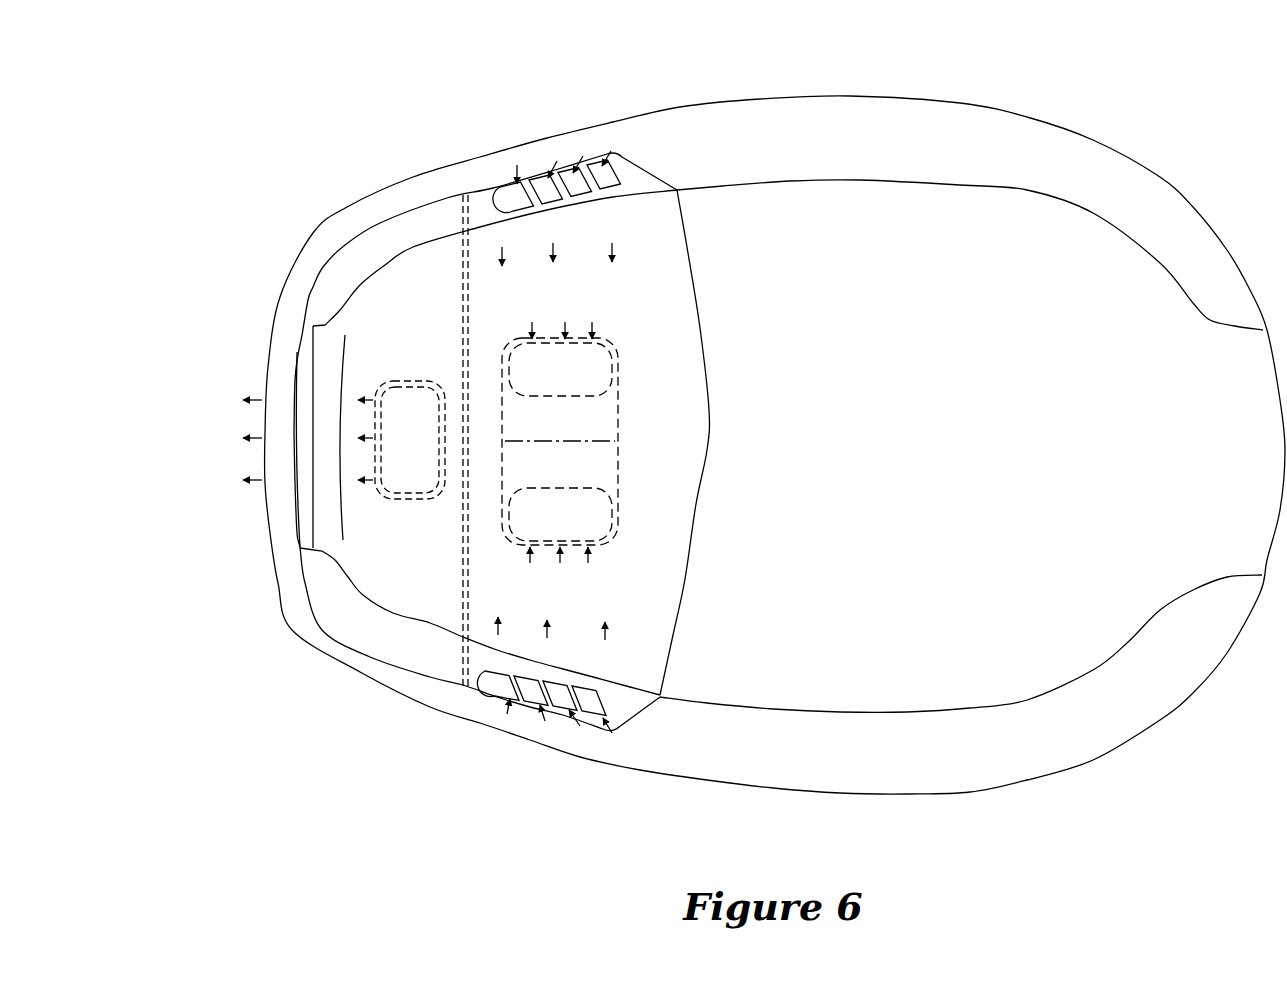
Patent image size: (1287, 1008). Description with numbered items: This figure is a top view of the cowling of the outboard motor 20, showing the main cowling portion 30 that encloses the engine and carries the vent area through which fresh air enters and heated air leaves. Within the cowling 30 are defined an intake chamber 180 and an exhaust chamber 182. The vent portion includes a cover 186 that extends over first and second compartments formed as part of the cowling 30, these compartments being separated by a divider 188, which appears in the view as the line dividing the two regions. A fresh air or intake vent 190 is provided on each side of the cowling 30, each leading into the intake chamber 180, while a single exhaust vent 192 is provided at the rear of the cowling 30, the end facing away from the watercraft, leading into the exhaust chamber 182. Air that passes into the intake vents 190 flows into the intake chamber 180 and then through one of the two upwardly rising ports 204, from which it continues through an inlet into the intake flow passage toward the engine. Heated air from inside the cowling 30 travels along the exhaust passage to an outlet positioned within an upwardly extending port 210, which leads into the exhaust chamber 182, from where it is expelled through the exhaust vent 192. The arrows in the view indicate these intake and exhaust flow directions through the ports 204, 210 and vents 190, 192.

The outboard motor 20 is at (1188, 168).
The main cowling portion 30 is at (924, 119).
The intake chamber 180 is at (680, 418).
The exhaust chamber 182 is at (403, 307).
The cover 186 is at (440, 227).
The divider 188 is at (460, 603).
The intake vent 190 is at (592, 180).
The exhaust vent 192 is at (308, 372).
The upwardly rising ports 204 is at (597, 357).
The upwardly extending port 210 is at (405, 500).